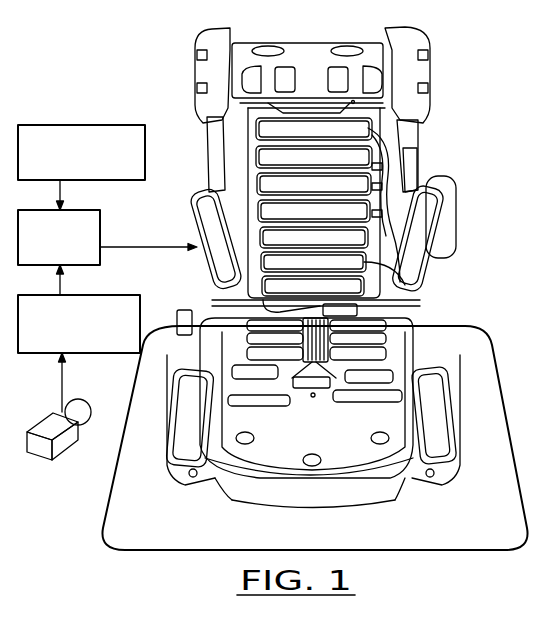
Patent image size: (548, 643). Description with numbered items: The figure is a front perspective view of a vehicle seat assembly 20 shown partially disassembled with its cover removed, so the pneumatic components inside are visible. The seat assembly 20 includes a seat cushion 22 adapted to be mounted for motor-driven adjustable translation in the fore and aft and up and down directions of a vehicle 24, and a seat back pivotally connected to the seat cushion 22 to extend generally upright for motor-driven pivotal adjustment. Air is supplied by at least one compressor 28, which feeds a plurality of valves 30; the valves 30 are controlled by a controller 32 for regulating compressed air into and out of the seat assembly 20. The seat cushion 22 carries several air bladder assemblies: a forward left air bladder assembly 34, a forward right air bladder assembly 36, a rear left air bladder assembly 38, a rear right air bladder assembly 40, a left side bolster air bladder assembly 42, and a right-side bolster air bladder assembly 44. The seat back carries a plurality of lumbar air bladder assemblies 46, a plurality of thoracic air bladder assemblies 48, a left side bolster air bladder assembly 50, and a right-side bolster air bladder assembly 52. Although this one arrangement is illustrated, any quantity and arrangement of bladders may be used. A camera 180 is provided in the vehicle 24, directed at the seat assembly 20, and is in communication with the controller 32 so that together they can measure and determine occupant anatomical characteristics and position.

The vehicle seat assembly 20 is at (460, 153).
The seat cushion 22 is at (155, 463).
The vehicle 24 is at (469, 359).
The compressor 28 is at (81, 152).
The valves 30 is at (59, 237).
The controller 32 is at (79, 324).
The forward left air bladder assembly 34 is at (426, 160).
The forward right air bladder assembly 36 is at (273, 398).
The rear left air bladder assembly 38 is at (360, 340).
The rear right air bladder assembly 40 is at (260, 338).
The left side bolster air bladder assembly 42 is at (448, 432).
The right-side bolster air bladder assembly 44 is at (190, 425).
The lumbar air bladder assemblies 46 is at (358, 261).
The thoracic air bladder assemblies 48 is at (277, 157).
The left side bolster air bladder assembly 50 is at (405, 231).
The right-side bolster air bladder assembly 52 is at (195, 235).
The camera 180 is at (54, 406).